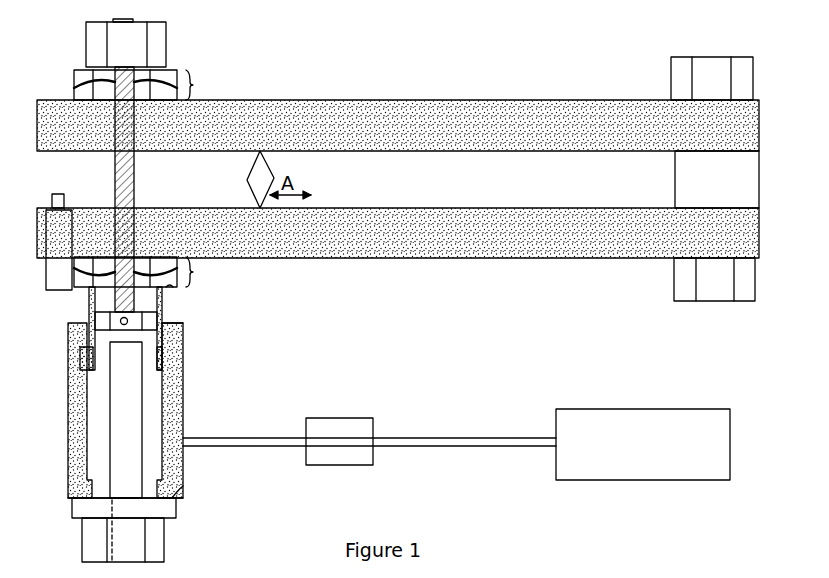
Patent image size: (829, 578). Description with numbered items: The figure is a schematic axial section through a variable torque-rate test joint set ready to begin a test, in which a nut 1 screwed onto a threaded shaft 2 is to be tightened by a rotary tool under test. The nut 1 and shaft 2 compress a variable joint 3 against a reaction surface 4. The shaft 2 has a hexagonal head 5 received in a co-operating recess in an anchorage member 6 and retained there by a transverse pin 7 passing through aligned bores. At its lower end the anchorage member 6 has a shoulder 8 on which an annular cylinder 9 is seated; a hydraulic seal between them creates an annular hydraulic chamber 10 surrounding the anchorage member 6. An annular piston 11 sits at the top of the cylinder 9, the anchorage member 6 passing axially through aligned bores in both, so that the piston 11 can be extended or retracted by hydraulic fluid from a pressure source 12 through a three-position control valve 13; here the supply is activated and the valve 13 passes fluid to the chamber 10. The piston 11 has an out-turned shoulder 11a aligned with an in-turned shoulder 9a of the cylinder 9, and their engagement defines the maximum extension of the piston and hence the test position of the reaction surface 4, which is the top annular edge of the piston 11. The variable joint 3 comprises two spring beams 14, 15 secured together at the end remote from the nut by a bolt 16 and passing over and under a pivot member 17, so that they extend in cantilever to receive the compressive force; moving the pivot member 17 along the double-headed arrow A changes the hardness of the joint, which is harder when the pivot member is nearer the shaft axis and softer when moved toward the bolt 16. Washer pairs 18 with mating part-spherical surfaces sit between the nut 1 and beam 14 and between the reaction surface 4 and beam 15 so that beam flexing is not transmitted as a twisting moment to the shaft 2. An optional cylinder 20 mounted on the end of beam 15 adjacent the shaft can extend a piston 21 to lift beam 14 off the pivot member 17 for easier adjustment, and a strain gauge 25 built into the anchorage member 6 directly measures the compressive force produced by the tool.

The nut 1 is at (163, 37).
The threaded shaft 2 is at (132, 192).
The variable joint 3 is at (352, 80).
The reaction surface 4 is at (170, 288).
The hexagonal head 5 is at (133, 325).
The anchorage member 6 is at (150, 393).
The transverse pin 7 is at (120, 323).
The shoulder 8 is at (186, 487).
The annular cylinder 9 is at (68, 395).
The in-turned shoulder 9a is at (162, 337).
The annular hydraulic chamber 10 is at (165, 423).
The annular piston 11 is at (90, 307).
The out-turned shoulder 11a is at (168, 360).
The pressure source 12 is at (593, 437).
The three-position control valve 13 is at (333, 426).
The spring beam 14 is at (408, 116).
The spring beam 15 is at (385, 218).
The bolt 16 is at (682, 78).
The pivot member 17 is at (263, 170).
The washer pairs 18 is at (193, 80).
The cylinder 20 is at (52, 238).
The piston 21 is at (52, 199).
The strain gauge 25 is at (83, 357).